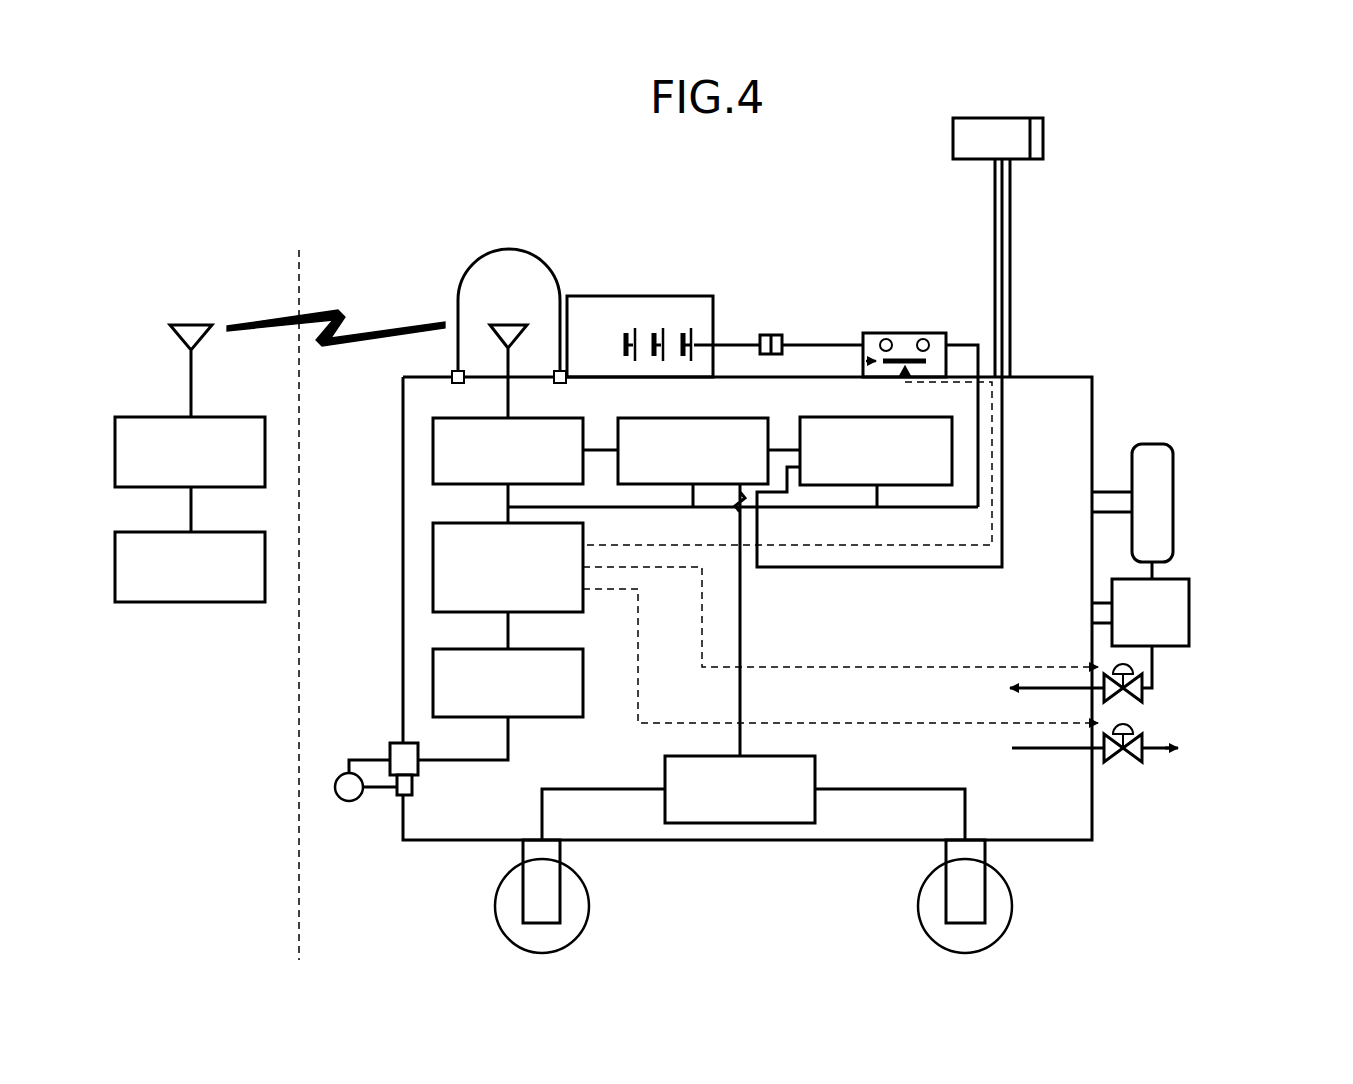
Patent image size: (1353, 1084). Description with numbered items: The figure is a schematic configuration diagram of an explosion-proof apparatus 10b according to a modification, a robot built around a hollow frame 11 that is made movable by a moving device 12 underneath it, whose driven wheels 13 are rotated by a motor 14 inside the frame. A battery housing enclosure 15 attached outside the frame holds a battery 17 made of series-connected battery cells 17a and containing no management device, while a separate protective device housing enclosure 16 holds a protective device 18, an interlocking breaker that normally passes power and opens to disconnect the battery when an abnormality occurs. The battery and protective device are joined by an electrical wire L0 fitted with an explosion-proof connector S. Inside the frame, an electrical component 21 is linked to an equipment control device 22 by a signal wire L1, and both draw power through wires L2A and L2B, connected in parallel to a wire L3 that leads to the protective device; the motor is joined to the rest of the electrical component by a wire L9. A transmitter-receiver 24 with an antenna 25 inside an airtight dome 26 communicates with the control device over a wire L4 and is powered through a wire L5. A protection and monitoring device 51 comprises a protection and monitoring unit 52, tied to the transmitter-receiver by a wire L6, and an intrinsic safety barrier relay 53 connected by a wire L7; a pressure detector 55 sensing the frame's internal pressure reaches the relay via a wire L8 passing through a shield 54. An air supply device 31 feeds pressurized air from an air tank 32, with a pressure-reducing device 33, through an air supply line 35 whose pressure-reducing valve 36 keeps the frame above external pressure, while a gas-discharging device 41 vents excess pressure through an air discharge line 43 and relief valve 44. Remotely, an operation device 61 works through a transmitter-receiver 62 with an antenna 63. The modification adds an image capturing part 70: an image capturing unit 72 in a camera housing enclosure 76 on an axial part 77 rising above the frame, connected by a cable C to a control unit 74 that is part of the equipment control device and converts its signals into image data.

The explosion-proof apparatus 10b is at (1118, 307).
The frame 11 is at (1050, 356).
The moving device 12 is at (1048, 858).
The driven wheels 13 is at (590, 905).
The motor 14 is at (778, 738).
The battery housing enclosure 15 is at (650, 296).
The protective device housing enclosure 16 is at (905, 333).
The battery 17 is at (677, 288).
The battery cells 17a is at (638, 338).
The protective device 18 is at (871, 360).
The electrical component 21 is at (912, 400).
The equipment control device 22 is at (693, 439).
The control unit 74 is at (686, 400).
The transmitter-receiver 24 is at (546, 400).
The antenna 25 is at (509, 322).
The airtight dome 26 is at (510, 248).
The air supply device 31 is at (1188, 566).
The air tank 32 is at (1173, 492).
The pressure-reducing device 33 is at (1189, 608).
The air supply line 35 is at (1053, 688).
The pressure-reducing valve 36 is at (1143, 674).
The gas-discharging device 41 is at (934, 697).
The air discharge line 43 is at (1055, 748).
The relief valve 44 is at (1132, 762).
The protection and monitoring device 51 is at (460, 665).
The protection and monitoring unit 52 is at (446, 505).
The intrinsic safety barrier relay 53 is at (546, 630).
The shield 54 is at (390, 743).
The pressure detector 55 is at (348, 804).
The operation device 61 is at (229, 515).
The transmitter-receiver 62 is at (229, 400).
The antenna 63 is at (192, 325).
The image capturing part 70 is at (1021, 209).
The image capturing unit 72 is at (1006, 108).
The camera housing enclosure 76 is at (959, 94).
The axial part 77 is at (1029, 268).
The cable C is at (1010, 261).
The explosion-proof connector S is at (764, 328).
The electrical wire L0 is at (815, 345).
The electrical wire L1 is at (785, 448).
The electrical wire L2A is at (872, 508).
The electrical wire L2B is at (694, 490).
The electrical wire L3 is at (986, 430).
The electrical wire L4 is at (600, 448).
The electrical wire L5 is at (588, 514).
The electrical wire L6 is at (508, 497).
The electrical wire L7 is at (508, 630).
The electrical wire L8 is at (476, 762).
The electrical wire L9 is at (740, 686).